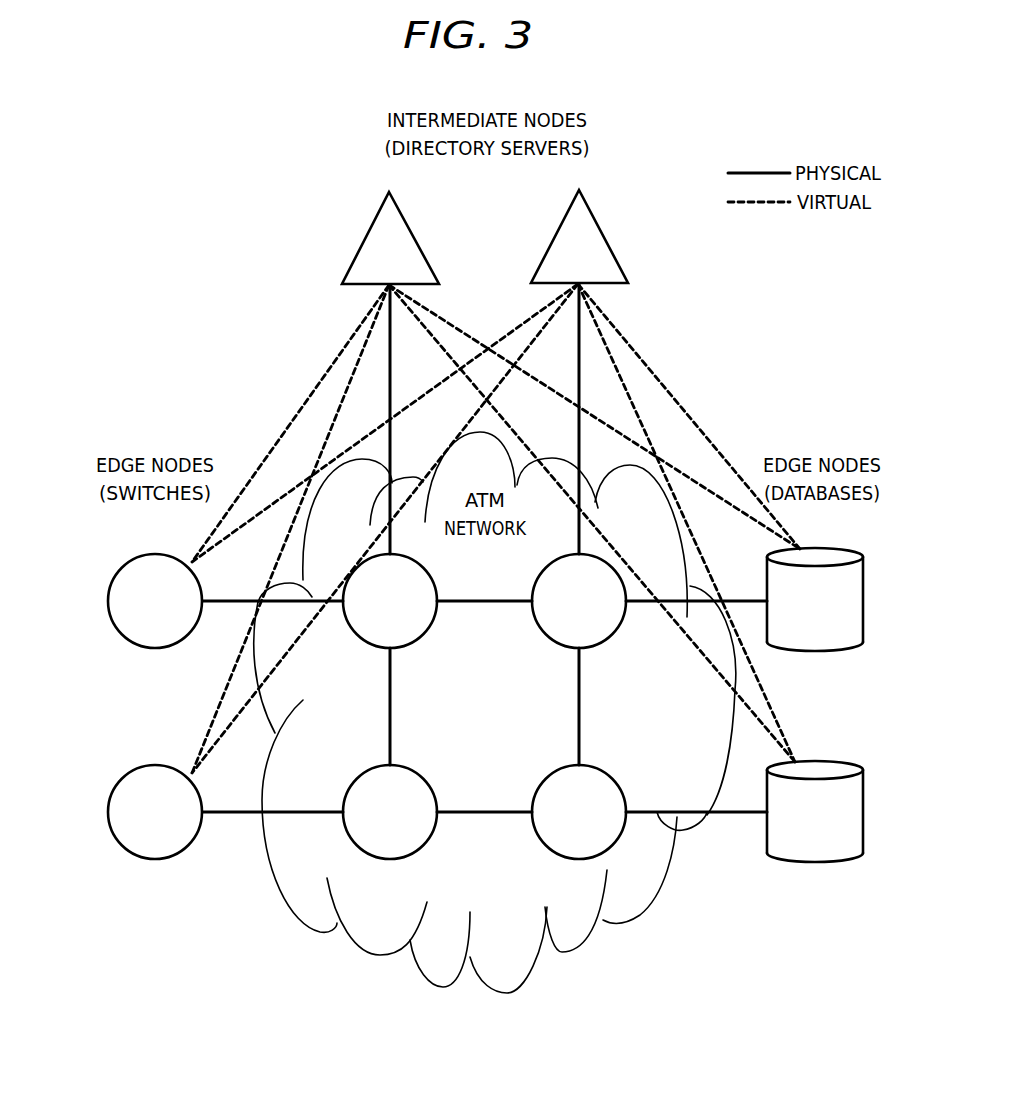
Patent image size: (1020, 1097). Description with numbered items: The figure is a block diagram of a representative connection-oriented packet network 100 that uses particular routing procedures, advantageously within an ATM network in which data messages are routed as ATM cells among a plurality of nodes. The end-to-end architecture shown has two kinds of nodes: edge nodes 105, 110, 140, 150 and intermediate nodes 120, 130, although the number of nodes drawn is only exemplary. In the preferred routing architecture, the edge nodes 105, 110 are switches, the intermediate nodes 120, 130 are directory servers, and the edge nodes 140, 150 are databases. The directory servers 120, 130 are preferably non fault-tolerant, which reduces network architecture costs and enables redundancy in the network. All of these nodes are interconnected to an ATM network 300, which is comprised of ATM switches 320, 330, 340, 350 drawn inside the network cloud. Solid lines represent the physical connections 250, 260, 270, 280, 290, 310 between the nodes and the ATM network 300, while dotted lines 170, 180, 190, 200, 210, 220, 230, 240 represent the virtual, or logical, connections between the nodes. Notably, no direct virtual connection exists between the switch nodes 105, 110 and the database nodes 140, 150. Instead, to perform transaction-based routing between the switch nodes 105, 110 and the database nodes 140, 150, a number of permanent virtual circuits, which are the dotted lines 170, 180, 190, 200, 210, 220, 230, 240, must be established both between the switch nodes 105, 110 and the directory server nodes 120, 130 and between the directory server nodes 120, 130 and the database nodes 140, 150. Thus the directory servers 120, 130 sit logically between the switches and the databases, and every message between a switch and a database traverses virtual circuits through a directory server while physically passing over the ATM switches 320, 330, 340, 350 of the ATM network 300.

The connection-oriented packet network 100 is at (318, 120).
The edge node 105 is at (108, 812).
The edge node 110 is at (108, 601).
The intermediate node 120 is at (366, 238).
The intermediate node 130 is at (603, 235).
The edge node 140 is at (865, 601).
The edge node 150 is at (865, 812).
The dotted line 170 is at (318, 380).
The dotted line 180 is at (688, 478).
The dotted line 190 is at (658, 382).
The dotted line 200 is at (771, 711).
The dotted line 210 is at (246, 524).
The dotted line 220 is at (224, 689).
The dotted line 230 is at (232, 722).
The dotted line 240 is at (627, 565).
The physical connection 250 is at (228, 604).
The physical connection 260 is at (399, 386).
The physical connection 270 is at (233, 815).
The physical connection 280 is at (580, 330).
The physical connection 290 is at (741, 597).
The ATM network 300 is at (508, 995).
The physical connection 310 is at (740, 815).
The ATM switch 320 is at (360, 634).
The ATM switch 330 is at (612, 634).
The ATM switch 340 is at (359, 778).
The ATM switch 350 is at (613, 778).